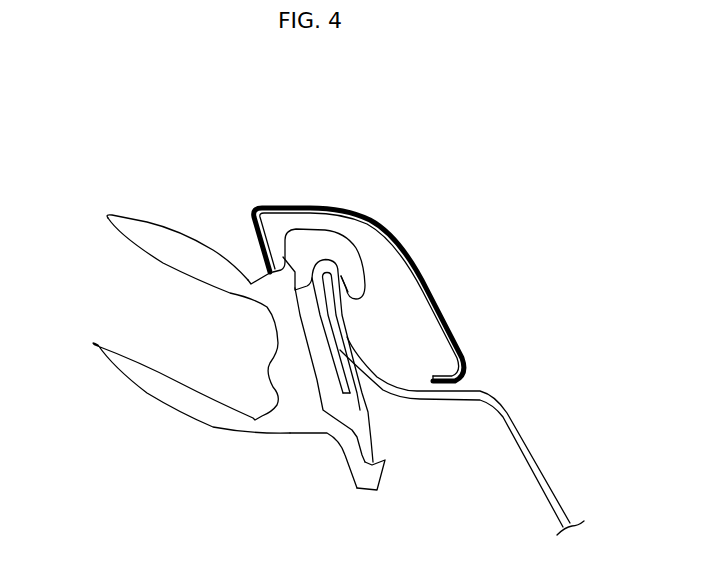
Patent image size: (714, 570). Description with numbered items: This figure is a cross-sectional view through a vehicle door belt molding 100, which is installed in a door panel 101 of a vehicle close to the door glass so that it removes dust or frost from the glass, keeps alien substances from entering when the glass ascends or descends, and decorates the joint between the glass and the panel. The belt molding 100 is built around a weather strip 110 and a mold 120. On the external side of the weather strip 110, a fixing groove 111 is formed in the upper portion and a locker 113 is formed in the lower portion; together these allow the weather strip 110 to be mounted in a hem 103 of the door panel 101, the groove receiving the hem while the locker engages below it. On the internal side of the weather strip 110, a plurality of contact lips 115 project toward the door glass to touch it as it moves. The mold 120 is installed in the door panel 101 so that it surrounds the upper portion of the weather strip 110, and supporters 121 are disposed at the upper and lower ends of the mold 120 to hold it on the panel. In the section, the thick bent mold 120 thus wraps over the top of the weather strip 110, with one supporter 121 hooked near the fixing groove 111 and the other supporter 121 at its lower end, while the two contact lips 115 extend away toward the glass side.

The vehicle door belt molding 100 is at (351, 93).
The door panel 101 is at (364, 311).
The hem 103 is at (353, 337).
The weather strip 110 is at (295, 272).
The fixing groove 111 is at (333, 265).
The locker 113 is at (383, 462).
The contact lips 115 is at (108, 218).
The mold 120 is at (384, 196).
The supporters 121 is at (257, 205).